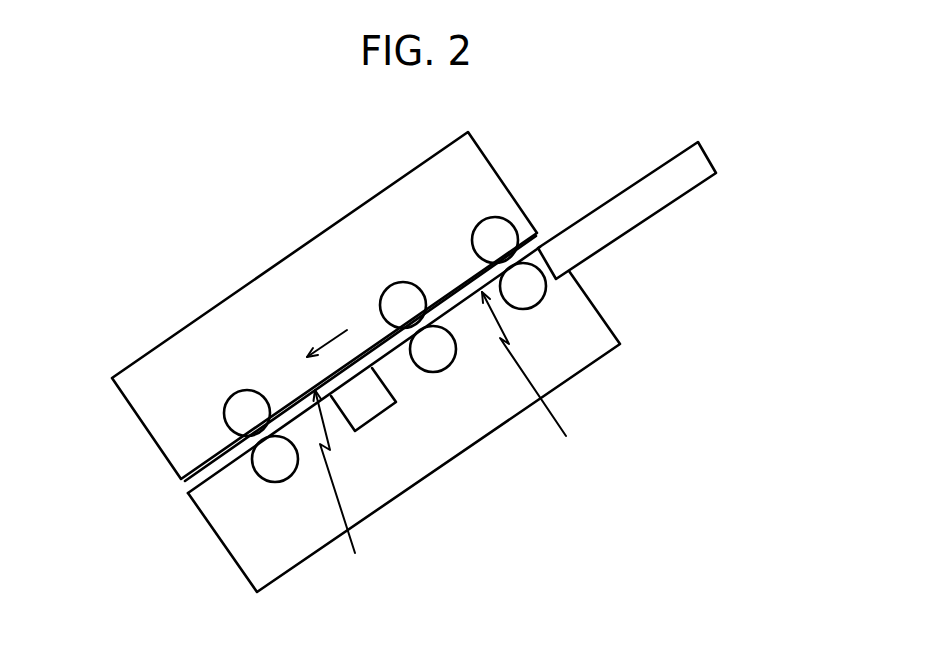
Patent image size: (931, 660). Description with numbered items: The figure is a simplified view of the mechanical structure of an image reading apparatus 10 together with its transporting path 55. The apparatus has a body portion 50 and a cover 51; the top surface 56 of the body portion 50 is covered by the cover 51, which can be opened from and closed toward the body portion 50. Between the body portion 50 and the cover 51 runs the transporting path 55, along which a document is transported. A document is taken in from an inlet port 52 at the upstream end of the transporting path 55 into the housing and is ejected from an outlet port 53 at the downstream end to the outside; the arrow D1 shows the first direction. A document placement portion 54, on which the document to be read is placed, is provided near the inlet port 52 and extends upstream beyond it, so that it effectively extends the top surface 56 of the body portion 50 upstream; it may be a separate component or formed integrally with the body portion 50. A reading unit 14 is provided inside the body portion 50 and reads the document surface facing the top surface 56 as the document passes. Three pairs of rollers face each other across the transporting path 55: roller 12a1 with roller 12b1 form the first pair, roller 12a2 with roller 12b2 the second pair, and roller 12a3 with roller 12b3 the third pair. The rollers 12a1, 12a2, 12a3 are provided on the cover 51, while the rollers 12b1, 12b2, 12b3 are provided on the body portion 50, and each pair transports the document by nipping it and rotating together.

The image reading apparatus 10 is at (347, 199).
The cover 51 is at (478, 147).
The body portion 50 is at (612, 330).
The document placement portion 54 is at (705, 152).
The outlet port 53 is at (172, 488).
The inlet port 52 is at (543, 234).
The roller 12a1 is at (476, 232).
The roller 12a2 is at (386, 290).
The roller 12a3 is at (247, 390).
The roller 12b1 is at (540, 302).
The roller 12b2 is at (456, 350).
The roller 12b3 is at (271, 482).
The reading unit 14 is at (397, 404).
The transporting path 55 is at (344, 489).
The top surface 56 is at (537, 380).
The first direction D1 is at (323, 335).